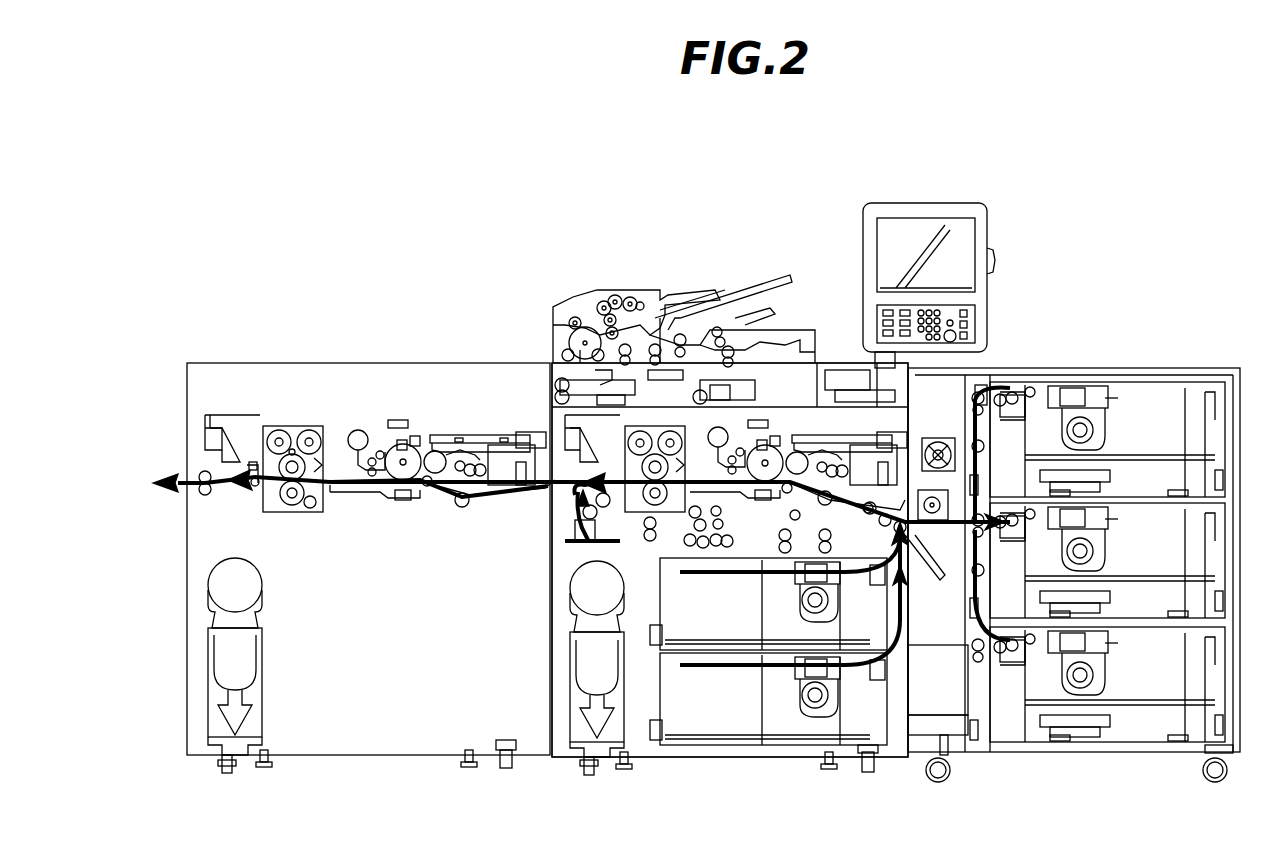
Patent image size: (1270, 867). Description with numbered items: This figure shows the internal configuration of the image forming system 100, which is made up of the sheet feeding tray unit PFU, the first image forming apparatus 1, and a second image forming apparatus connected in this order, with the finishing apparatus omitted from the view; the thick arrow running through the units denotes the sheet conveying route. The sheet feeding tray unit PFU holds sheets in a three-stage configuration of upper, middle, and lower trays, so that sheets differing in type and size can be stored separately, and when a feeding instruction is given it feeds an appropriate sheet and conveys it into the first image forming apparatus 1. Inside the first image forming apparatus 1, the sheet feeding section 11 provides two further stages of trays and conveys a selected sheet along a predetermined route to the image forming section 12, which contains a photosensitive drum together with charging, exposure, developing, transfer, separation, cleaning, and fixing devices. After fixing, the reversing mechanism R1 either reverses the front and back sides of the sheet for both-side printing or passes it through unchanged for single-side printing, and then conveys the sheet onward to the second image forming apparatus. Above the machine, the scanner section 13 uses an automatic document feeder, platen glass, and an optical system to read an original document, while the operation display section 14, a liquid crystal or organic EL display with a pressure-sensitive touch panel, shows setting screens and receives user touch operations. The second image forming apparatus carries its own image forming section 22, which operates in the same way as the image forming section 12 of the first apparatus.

The image forming system 100 is at (988, 160).
The first image forming apparatus 1 is at (785, 760).
The sheet feeding section 11 is at (723, 618).
The image forming section 12 is at (770, 440).
The scanner section 13 is at (640, 290).
The operation display section 14 is at (988, 222).
The image forming section 22 is at (408, 430).
The reversing mechanism R1 is at (575, 540).
The sheet feeding tray unit PFU is at (1120, 755).